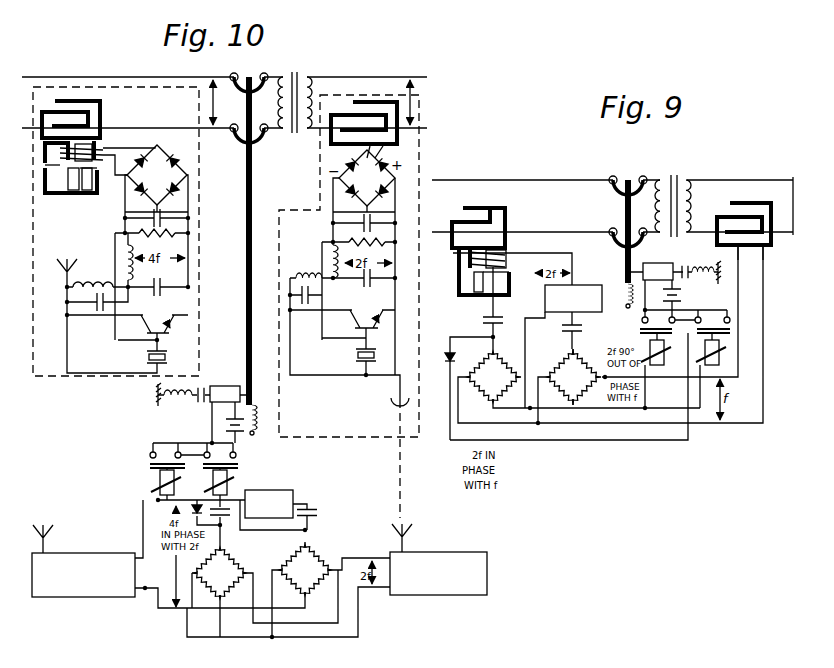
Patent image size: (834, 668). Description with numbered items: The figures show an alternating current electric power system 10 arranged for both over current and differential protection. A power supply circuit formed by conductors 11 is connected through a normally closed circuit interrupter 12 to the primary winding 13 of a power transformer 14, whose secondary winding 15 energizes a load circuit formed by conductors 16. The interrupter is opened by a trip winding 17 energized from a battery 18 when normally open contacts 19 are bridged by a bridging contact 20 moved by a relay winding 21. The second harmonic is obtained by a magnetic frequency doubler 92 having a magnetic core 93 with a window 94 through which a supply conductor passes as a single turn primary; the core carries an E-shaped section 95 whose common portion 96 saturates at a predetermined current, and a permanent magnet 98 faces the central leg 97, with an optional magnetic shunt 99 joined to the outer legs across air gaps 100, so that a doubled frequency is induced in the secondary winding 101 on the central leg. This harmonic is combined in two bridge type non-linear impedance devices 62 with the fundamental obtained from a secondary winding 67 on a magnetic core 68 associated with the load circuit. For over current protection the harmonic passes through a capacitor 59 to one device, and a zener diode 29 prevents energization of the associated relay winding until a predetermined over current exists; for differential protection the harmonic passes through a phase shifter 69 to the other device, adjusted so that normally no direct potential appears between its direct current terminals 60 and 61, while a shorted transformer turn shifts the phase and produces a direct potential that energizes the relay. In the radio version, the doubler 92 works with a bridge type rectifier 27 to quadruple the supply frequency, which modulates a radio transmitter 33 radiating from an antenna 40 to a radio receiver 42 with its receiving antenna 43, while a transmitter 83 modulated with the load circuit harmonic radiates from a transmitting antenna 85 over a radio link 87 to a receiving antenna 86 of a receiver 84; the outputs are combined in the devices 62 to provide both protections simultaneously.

In FIG. 10, the alternating current electric power system 10 is at (127, 60).
In FIG. 9, the alternating current electric power system 10 is at (606, 161).
In FIG. 10, the power supply circuit conductors 11 is at (166, 76).
In FIG. 9, the power supply circuit conductors 11 is at (543, 180).
In FIG. 10, the circuit interrupter 12 is at (172, 125).
In FIG. 9, the circuit interrupter 12 is at (648, 238).
In FIG. 10, the primary winding 13 is at (283, 111).
In FIG. 9, the primary winding 13 is at (658, 201).
In FIG. 10, the power transformer 14 is at (305, 72).
In FIG. 9, the power transformer 14 is at (683, 176).
In FIG. 10, the secondary winding 15 is at (312, 95).
In FIG. 9, the secondary winding 15 is at (690, 186).
In FIG. 10, the load circuit conductors 16 is at (422, 80).
In FIG. 9, the load circuit conductors 16 is at (786, 229).
In FIG. 10, the trip winding 17 is at (215, 384).
In FIG. 9, the trip winding 17 is at (668, 268).
In FIG. 10, the battery 18 is at (248, 430).
In FIG. 9, the battery 18 is at (682, 295).
In FIG. 10, the normally open contacts 19 is at (206, 451).
In FIG. 9, the normally open contacts 19 is at (720, 312).
In FIG. 10, the bridging contact 20 is at (150, 466).
In FIG. 9, the bridging contact 20 is at (640, 331).
In FIG. 10, the relay winding 21 is at (158, 482).
In FIG. 9, the relay winding 21 is at (772, 352).
In FIG. 10, the bridge type rectifier 27 is at (171, 162).
In FIG. 10, the zener diode 29 is at (196, 506).
In FIG. 9, the zener diode 29 is at (447, 356).
In FIG. 10, the radio transmitter 33 is at (100, 382).
In FIG. 10, the antenna 40 is at (72, 266).
In FIG. 10, the radio receiver 42 is at (103, 553).
In FIG. 10, the receiver antenna 43 is at (50, 536).
In FIG. 10, the capacitor 59 is at (318, 512).
In FIG. 9, the capacitor 59 is at (483, 319).
In FIG. 9, the direct current terminal 60 is at (580, 350).
In FIG. 9, the direct current terminal 61 is at (578, 406).
In FIG. 10, the non-linear impedance device of the bridge type 62 is at (243, 561).
In FIG. 9, the non-linear impedance device of the bridge type 62 is at (497, 352).
In FIG. 9, the secondary winding 67 is at (750, 264).
In FIG. 9, the magnetic core 68 is at (751, 238).
In FIG. 10, the phase shifter 69 is at (288, 490).
In FIG. 9, the phase shifter 69 is at (590, 285).
In FIG. 10, the transmitter 83 is at (352, 440).
In FIG. 10, the receiver 84 is at (446, 552).
In FIG. 10, the transmitter B antenna 85 is at (398, 380).
In FIG. 10, the receiver B antenna 86 is at (398, 523).
In FIG. 10, the radio link 87 is at (398, 487).
In FIG. 10, the magnetic frequency doubler 92 is at (62, 92).
In FIG. 9, the magnetic frequency doubler 92 is at (455, 214).
In FIG. 10, the magnetic core 93 is at (53, 103).
In FIG. 9, the magnetic core 93 is at (452, 220).
In FIG. 10, the window 94 is at (92, 114).
In FIG. 9, the window 94 is at (497, 226).
In FIG. 10, the E-shaped section 95 is at (38, 160).
In FIG. 9, the E-shaped section 95 is at (441, 260).
In FIG. 10, the common portion 96 is at (87, 136).
In FIG. 9, the common portion 96 is at (495, 243).
In FIG. 10, the central leg 97 is at (55, 168).
In FIG. 10, the permanent magnet 98 is at (78, 193).
In FIG. 9, the permanent magnet 98 is at (507, 288).
In FIG. 10, the magnetic shunt 99 is at (50, 193).
In FIG. 9, the magnetic shunt 99 is at (457, 295).
In FIG. 10, the air gaps 100 is at (42, 186).
In FIG. 9, the air gaps 100 is at (457, 273).
In FIG. 10, the secondary winding 101 is at (103, 153).
In FIG. 9, the secondary winding 101 is at (505, 262).